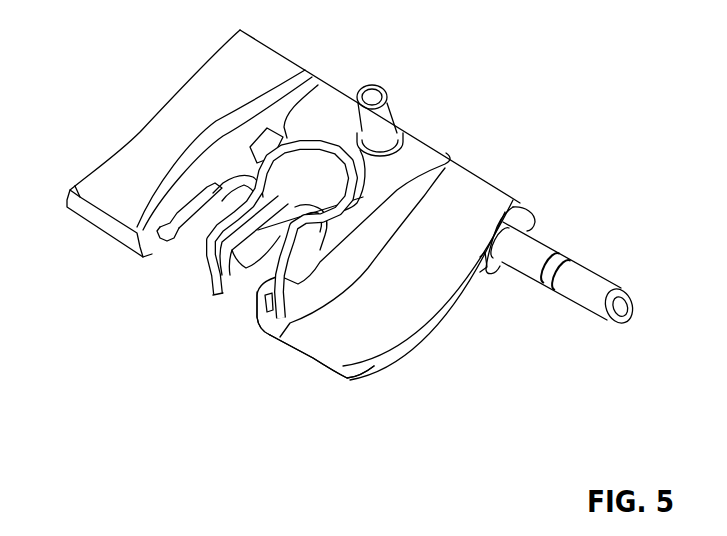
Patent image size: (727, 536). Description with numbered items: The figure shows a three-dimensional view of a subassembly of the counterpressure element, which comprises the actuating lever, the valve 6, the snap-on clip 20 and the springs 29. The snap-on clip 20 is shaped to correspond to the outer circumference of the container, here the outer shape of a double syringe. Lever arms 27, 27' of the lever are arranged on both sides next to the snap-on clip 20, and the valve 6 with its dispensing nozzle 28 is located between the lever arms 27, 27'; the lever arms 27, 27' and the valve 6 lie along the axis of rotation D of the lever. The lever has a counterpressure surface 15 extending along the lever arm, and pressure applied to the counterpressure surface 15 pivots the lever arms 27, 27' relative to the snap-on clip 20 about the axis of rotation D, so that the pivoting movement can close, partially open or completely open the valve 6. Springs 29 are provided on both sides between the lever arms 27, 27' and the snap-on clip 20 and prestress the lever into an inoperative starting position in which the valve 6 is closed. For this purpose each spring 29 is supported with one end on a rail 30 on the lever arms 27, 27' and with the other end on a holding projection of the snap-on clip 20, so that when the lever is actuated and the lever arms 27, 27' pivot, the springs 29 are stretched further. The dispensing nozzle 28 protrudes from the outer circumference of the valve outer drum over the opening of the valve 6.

The valve 6 is at (414, 145).
The counterpressure surface 15 is at (158, 135).
The snap-on clip 20 is at (212, 258).
The lever arm 27 is at (92, 198).
The end face of right lobe 27' is at (351, 359).
The dispensing nozzle 28 is at (381, 115).
The spring 29 is at (263, 172).
The rail 30 is at (185, 240).
The axis of rotation D is at (621, 311).